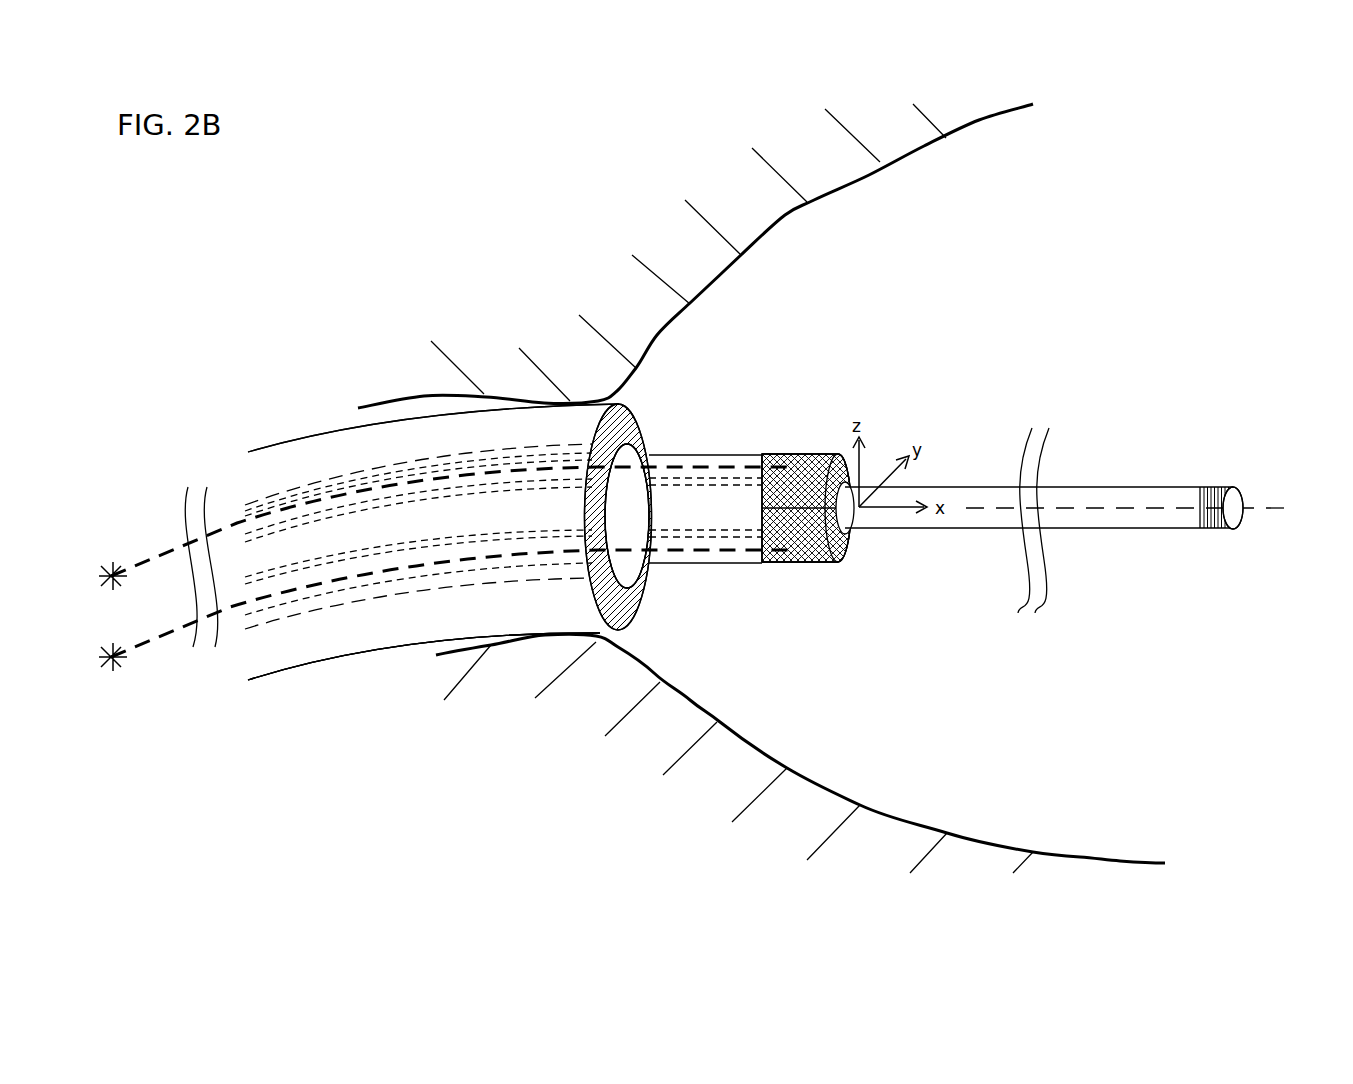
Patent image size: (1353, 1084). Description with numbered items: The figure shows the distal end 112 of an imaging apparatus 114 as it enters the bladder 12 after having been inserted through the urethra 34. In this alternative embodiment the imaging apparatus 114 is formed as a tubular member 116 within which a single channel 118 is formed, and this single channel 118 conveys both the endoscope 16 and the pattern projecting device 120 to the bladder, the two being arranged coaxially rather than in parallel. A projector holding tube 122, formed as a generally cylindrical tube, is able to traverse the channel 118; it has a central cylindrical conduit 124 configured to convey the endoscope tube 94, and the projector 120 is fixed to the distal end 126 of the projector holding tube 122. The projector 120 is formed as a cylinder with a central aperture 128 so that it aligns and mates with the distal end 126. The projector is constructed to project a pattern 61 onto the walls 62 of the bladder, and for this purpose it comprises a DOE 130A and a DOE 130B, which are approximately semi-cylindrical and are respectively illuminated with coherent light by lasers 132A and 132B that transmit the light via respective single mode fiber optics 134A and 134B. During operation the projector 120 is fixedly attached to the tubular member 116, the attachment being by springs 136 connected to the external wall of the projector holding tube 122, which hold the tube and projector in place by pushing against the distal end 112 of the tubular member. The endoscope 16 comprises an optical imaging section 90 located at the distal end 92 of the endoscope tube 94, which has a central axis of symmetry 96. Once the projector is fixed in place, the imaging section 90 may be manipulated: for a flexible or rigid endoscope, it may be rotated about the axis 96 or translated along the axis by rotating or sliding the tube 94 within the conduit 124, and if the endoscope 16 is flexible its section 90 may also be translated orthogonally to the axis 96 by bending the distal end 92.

The bladder 12 is at (984, 301).
The endoscope 16 is at (372, 552).
The urethra 34 is at (370, 400).
The pattern 61 is at (966, 138).
The walls 62 is at (860, 182).
The optical imaging section 90 is at (1218, 488).
The distal end 92 is at (1200, 488).
The endoscope tube 94 is at (985, 530).
The central axis of symmetry 96 is at (1282, 512).
The distal end 112 is at (635, 616).
The imaging apparatus 114 is at (292, 670).
The tubular member 116 is at (262, 662).
The single channel 118 is at (255, 491).
The pattern projecting device 120 is at (783, 564).
The projector holding tube 122 is at (703, 458).
The central cylindrical conduit 124 is at (747, 478).
The distal end 126 is at (770, 455).
The central aperture 128 is at (853, 547).
The DOE 130A is at (808, 564).
The DOE 130B is at (813, 455).
The laser 132A is at (115, 670).
The laser 132B is at (113, 565).
The single mode fiber optic 134A is at (164, 652).
The single mode fiber optic 134B is at (156, 540).
The springs 136 is at (625, 445).